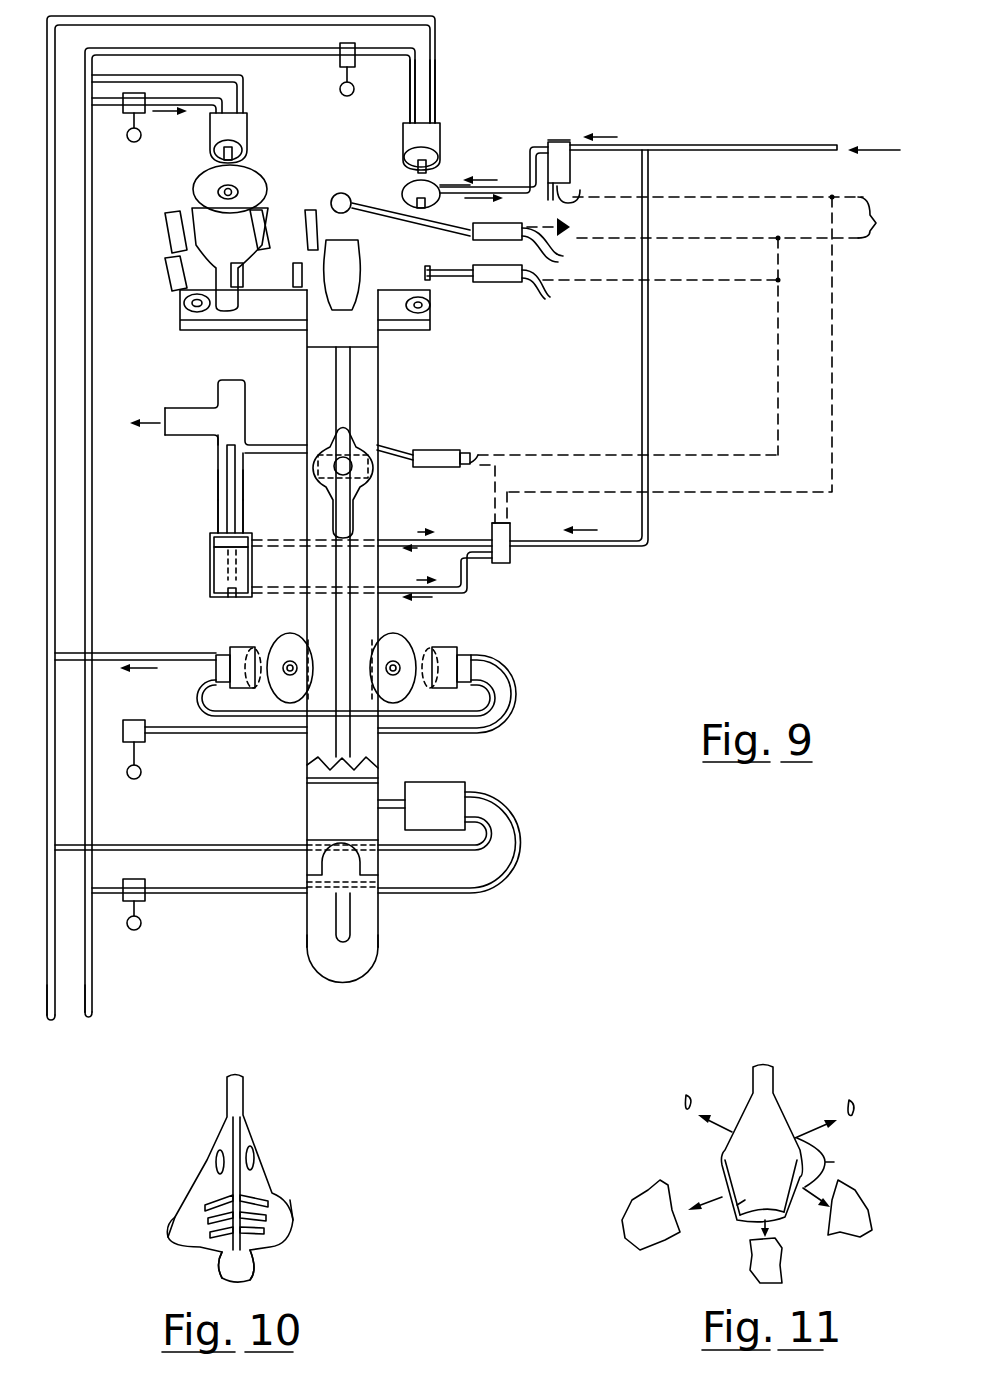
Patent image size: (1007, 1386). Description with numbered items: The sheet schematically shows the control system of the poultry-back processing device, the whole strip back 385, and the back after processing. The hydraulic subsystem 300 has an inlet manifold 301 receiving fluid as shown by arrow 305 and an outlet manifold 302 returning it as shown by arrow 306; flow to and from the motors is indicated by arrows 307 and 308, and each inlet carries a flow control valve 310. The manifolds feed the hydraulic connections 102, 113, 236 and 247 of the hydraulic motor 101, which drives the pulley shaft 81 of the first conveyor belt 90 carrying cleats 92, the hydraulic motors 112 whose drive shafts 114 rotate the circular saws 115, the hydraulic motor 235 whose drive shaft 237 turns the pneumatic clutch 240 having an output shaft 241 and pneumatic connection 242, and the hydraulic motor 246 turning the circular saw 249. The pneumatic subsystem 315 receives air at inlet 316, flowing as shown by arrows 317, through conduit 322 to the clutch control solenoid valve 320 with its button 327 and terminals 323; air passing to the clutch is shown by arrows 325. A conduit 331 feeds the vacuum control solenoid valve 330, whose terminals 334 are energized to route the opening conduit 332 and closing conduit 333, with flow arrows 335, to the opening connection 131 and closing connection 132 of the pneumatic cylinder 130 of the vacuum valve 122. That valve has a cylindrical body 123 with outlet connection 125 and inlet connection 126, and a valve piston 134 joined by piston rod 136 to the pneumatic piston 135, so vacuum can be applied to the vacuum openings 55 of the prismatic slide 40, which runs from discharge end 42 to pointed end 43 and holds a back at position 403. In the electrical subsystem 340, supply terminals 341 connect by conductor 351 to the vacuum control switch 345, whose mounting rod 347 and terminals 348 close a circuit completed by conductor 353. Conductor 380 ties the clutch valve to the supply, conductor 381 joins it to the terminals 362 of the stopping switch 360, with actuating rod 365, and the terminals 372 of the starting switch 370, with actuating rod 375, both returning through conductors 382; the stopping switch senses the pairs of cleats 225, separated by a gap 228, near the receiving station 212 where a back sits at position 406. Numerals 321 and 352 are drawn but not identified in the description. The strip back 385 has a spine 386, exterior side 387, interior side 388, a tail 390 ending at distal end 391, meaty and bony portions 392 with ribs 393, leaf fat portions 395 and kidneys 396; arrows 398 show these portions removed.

In FIG. 9, the hydraulic subsystem 300 is at (512, 35).
In FIG. 9, the inlet manifold 301 is at (92, 995).
In FIG. 9, the outlet manifold 302 is at (55, 996).
In FIG. 9, the arrow 305 is at (90, 1028).
In FIG. 9, the arrow 306 is at (53, 1030).
In FIG. 9, the arrows 307 is at (170, 895).
In FIG. 9, the arrows 308 is at (178, 857).
In FIG. 9, the flow control valve 310 is at (350, 60).
In FIG. 9, the hydraulic connections 247 is at (193, 85).
In FIG. 9, the hydraulic motor 246 is at (243, 130).
In FIG. 9, the circular saw 249 is at (215, 180).
In FIG. 9, the gap 228 is at (175, 248).
In FIG. 9, the pairs of cleats 225 is at (245, 262).
In FIG. 9, the receiving station 212 is at (310, 291).
In FIG. 9, the position 406 is at (360, 240).
In FIG. 9, the actuating rod 375 is at (432, 222).
In FIG. 9, the hydraulic connections 236 is at (418, 70).
In FIG. 9, the hydraulic motor 235 is at (407, 137).
In FIG. 9, the drive shaft 237 is at (410, 155).
In FIG. 9, the pneumatic clutch 240 is at (410, 183).
In FIG. 9, the output shaft 241 is at (412, 203).
In FIG. 9, the pneumatic connection 242 is at (445, 185).
In FIG. 9, the clutch control pneumatic solenoid valve 320 is at (567, 143).
In FIG. 9, the button 327 is at (560, 130).
In FIG. 9, the pneumatic conduit 322 is at (530, 148).
In FIG. 9, the arrows 325 is at (468, 176).
In FIG. 9, the arrows 317 is at (612, 132).
In FIG. 9, the valve port 321 is at (627, 147).
In FIG. 9, the electrical terminals 323 is at (577, 188).
In FIG. 9, the inlet 316 is at (772, 143).
In FIG. 9, the pneumatic subsystem 315 is at (677, 140).
In FIG. 9, the pneumatic conduit 331 is at (647, 518).
In FIG. 9, the electrical conductor 380 is at (767, 197).
In FIG. 9, the terminals 341 is at (893, 217).
In FIG. 9, the conductors 382 is at (735, 238).
In FIG. 9, the conductor 351 is at (777, 337).
In FIG. 9, the conductor 353 is at (790, 500).
In FIG. 9, the electrical subsystem 340 is at (847, 302).
In FIG. 9, the conveyor starting electrical switch 370 is at (503, 230).
In FIG. 9, the conductor 381 is at (572, 222).
In FIG. 9, the electrical terminals 372 is at (564, 248).
In FIG. 9, the actuating rod 365 is at (450, 273).
In FIG. 9, the conveyor stopping electric switch 360 is at (500, 280).
In FIG. 9, the electrical terminals 362 is at (554, 289).
In FIG. 9, the discharge longitudinal end 42 is at (380, 358).
In FIG. 9, the mounting rod 347 is at (390, 447).
In FIG. 9, the vacuum control electric switch 345 is at (437, 453).
In FIG. 9, the electrical terminals 348 is at (467, 460).
In FIG. 9, the control signal line 352 is at (505, 480).
In FIG. 9, the position 403 is at (330, 447).
In FIG. 9, the vacuum openings 55 is at (320, 470).
In FIG. 9, the tubular outlet connection 125 is at (182, 407).
In FIG. 9, the tubular inlet connection 126 is at (268, 445).
In FIG. 9, the valve piston 134 is at (227, 443).
In FIG. 9, the vacuum valve 122 is at (215, 478).
In FIG. 9, the cylindrical body 123 is at (213, 497).
In FIG. 9, the piston rod 136 is at (232, 515).
In FIG. 9, the pneumatic piston 135 is at (218, 547).
In FIG. 9, the pneumatic cylinder 130 is at (212, 578).
In FIG. 9, the opening pneumatic connection 131 is at (258, 543).
In FIG. 9, the closing pneumatic connection 132 is at (255, 588).
In FIG. 9, the pneumatic conduit 332 is at (473, 537).
In FIG. 9, the electrical terminals 334 is at (498, 520).
In FIG. 9, the vacuum control solenoid valve 330 is at (508, 550).
In FIG. 9, the pneumatic conduit 333 is at (458, 593).
In FIG. 9, the arrows 335 is at (408, 526).
In FIG. 9, the prismatic slide 40 is at (333, 633).
In FIG. 9, the drive shaft 114 is at (262, 650).
In FIG. 9, the hydraulic motor 112 is at (227, 650).
In FIG. 9, the hydraulic connections 113 is at (210, 677).
In FIG. 9, the circular saw 115 is at (283, 695).
In FIG. 9, the cleats 92 is at (312, 860).
In FIG. 9, the first conveyor belt 90 is at (355, 821).
In FIG. 9, the pulley shaft 81 is at (390, 800).
In FIG. 9, the hydraulic motor 101 is at (435, 806).
In FIG. 9, the hydraulic connections 102 is at (472, 814).
In FIG. 9, the pointed end 43 is at (345, 982).
In FIG. 10, the strip back 385 is at (208, 1135).
In FIG. 10, the spine 386 is at (233, 1180).
In FIG. 10, the kidneys 396 is at (250, 1155).
In FIG. 11, the kidneys 396 is at (683, 1103).
In FIG. 10, the ribs 393 is at (272, 1212).
In FIG. 10, the interior side 388 is at (208, 1237).
In FIG. 10, the leaf fat portions 395 is at (170, 1240).
In FIG. 11, the leaf fat portions 395 is at (645, 1240).
In FIG. 10, the distal end 391 is at (230, 1270).
In FIG. 10, the tail 390 is at (240, 1265).
In FIG. 11, the tail 390 is at (780, 1260).
In FIG. 11, the exterior side 387 is at (737, 1178).
In FIG. 11, the meaty and bony portions 392 is at (745, 1200).
In FIG. 11, the arrows 398 is at (846, 1162).